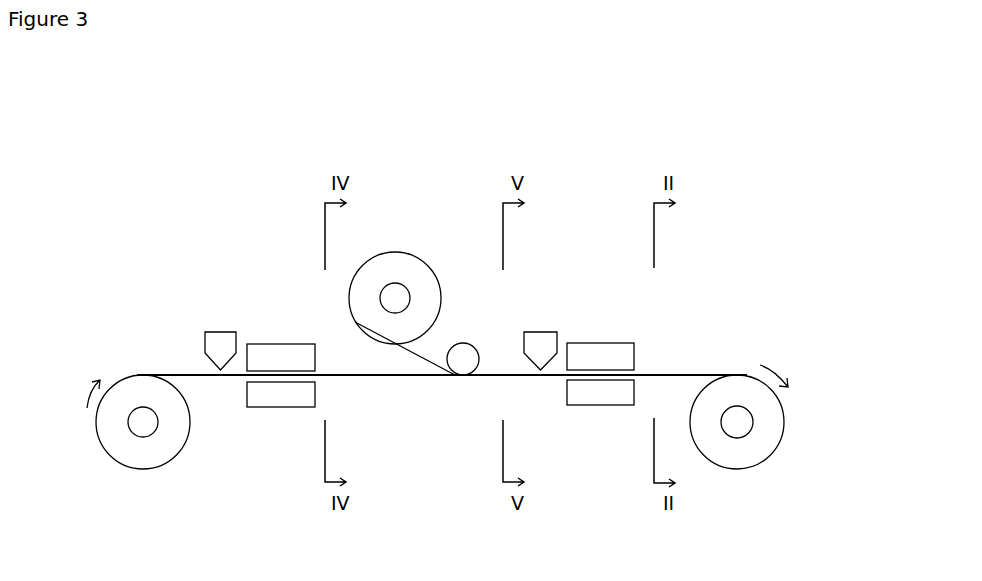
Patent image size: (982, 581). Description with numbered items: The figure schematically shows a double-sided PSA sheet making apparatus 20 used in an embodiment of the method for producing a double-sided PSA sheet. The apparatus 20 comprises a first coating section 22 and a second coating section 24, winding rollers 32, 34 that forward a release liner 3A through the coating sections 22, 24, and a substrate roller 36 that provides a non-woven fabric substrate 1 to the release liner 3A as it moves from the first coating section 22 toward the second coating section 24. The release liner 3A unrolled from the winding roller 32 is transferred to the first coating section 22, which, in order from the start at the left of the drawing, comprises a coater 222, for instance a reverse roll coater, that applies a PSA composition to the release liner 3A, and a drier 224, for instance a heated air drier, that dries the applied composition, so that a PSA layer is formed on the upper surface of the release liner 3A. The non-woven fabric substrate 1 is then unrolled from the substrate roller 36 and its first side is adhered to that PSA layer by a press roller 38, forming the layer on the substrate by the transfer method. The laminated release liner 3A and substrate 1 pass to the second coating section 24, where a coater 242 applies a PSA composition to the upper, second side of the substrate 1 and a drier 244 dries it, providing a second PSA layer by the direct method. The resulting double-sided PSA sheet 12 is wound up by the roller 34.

The non-woven fabric substrate 1 is at (394, 347).
The release liner 3A is at (203, 378).
The double-sided PSA sheet 12 is at (684, 374).
The double-sided PSA sheet making apparatus 20 is at (640, 138).
The first coating section 22 is at (273, 262).
The second coating section 24 is at (593, 260).
The winding roller 32 is at (107, 452).
The roller 34 is at (770, 438).
The substrate roller 36 is at (403, 254).
The press roller 38 is at (466, 344).
The coater 222 is at (215, 330).
The drier 224 is at (277, 343).
The coater 242 is at (533, 330).
The drier 244 is at (597, 343).